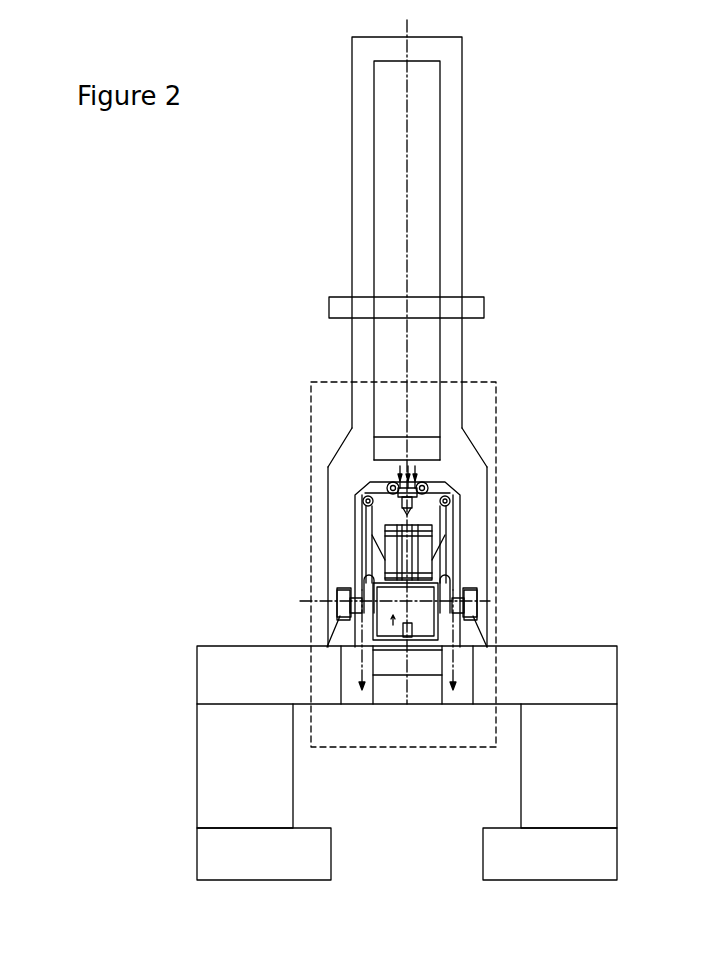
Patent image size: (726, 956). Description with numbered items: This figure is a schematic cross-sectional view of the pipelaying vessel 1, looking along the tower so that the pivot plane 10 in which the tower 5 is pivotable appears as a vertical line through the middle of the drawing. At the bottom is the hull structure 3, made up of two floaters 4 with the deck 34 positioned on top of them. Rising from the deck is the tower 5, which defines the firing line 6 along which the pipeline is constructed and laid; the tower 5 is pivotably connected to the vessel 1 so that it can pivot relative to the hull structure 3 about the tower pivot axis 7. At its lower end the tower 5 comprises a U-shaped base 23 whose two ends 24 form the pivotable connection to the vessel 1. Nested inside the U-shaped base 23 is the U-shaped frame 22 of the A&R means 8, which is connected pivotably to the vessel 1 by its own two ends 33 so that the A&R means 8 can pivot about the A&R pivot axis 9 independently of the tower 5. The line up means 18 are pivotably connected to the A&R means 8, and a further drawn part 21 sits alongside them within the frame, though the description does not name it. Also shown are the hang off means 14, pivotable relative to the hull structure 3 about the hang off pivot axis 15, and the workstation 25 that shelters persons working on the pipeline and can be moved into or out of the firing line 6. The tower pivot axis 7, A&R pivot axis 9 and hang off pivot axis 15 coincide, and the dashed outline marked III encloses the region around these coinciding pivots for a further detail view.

The vessel 1 is at (619, 206).
The hull structure 3 is at (146, 713).
The floaters 4 is at (203, 795).
The tower 5 is at (306, 167).
The firing line 6 is at (407, 137).
The tower pivot axis 7 is at (467, 602).
The A&R means 8 is at (440, 471).
The A&R pivot axis 9 is at (463, 590).
The pivot plane 10 is at (414, 90).
The hang off means 14 is at (416, 662).
The hang off pivot axis 15 is at (448, 587).
The line up means 18 is at (440, 535).
The arm 21 is at (448, 520).
The U-shaped frame 22 is at (375, 472).
The U-shaped base 23 is at (298, 496).
The ends of the U-shaped base 24 is at (337, 600).
The workstation 25 is at (383, 620).
The ends of the U-shaped frame 33 is at (345, 558).
The deck 34 is at (197, 666).
The section detail III is at (497, 391).